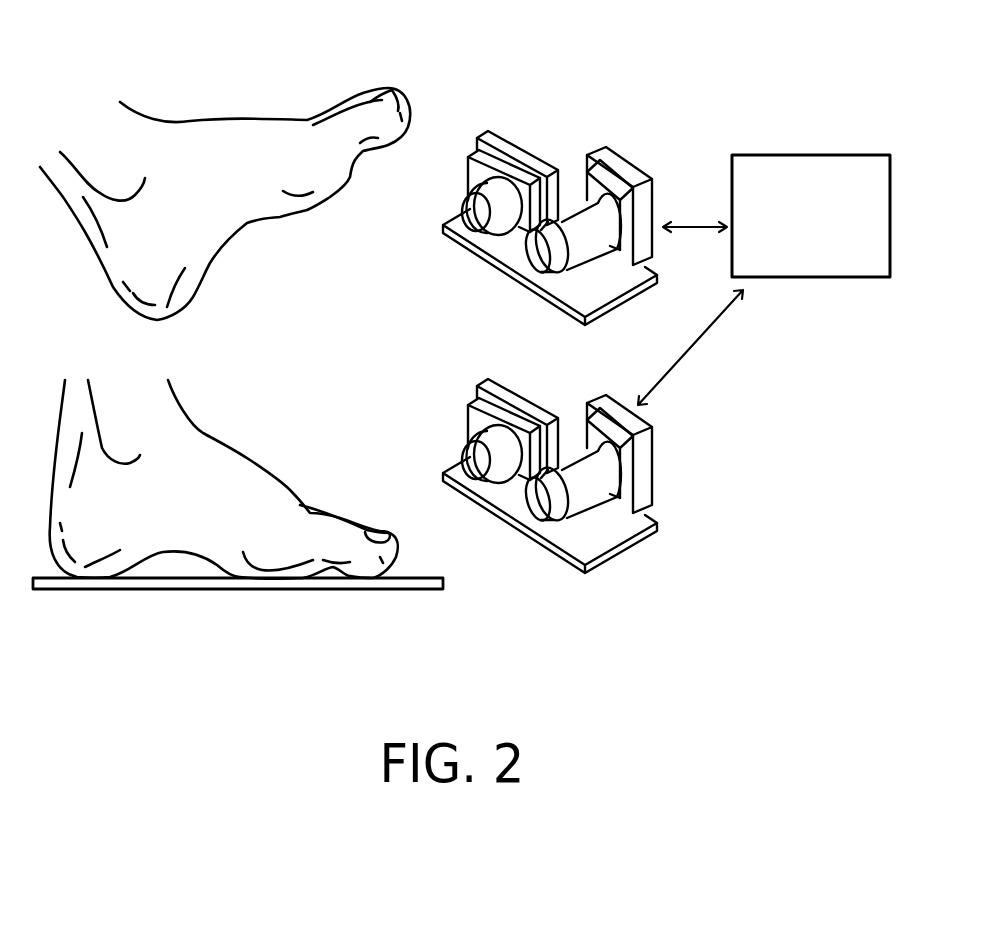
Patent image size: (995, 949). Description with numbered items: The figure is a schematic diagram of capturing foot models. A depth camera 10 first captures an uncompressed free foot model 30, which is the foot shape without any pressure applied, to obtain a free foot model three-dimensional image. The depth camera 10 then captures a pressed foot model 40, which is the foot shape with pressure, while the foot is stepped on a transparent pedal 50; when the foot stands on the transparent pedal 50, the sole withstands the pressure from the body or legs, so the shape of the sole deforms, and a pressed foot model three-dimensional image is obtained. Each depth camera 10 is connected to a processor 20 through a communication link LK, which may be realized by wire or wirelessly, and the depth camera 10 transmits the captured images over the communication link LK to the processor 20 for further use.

The depth camera 10 is at (620, 165).
The processor 20 is at (733, 155).
The uncompressed free foot model 30 is at (258, 120).
The pressed foot model 40 is at (279, 481).
The transparent pedal 50 is at (417, 593).
The communication link LK is at (690, 296).